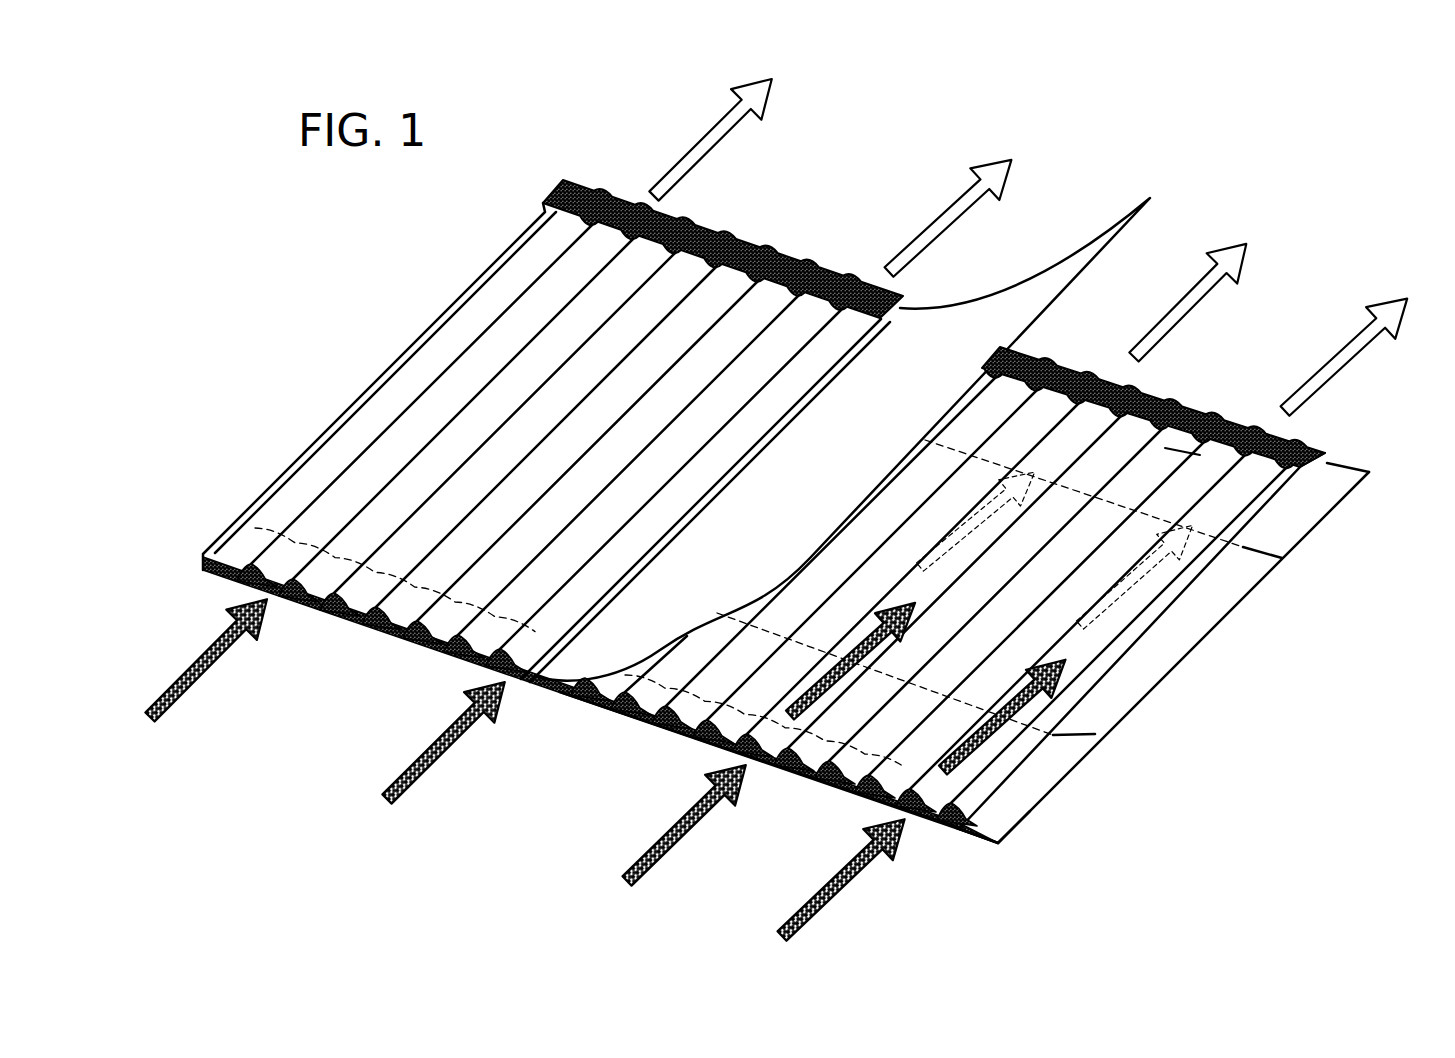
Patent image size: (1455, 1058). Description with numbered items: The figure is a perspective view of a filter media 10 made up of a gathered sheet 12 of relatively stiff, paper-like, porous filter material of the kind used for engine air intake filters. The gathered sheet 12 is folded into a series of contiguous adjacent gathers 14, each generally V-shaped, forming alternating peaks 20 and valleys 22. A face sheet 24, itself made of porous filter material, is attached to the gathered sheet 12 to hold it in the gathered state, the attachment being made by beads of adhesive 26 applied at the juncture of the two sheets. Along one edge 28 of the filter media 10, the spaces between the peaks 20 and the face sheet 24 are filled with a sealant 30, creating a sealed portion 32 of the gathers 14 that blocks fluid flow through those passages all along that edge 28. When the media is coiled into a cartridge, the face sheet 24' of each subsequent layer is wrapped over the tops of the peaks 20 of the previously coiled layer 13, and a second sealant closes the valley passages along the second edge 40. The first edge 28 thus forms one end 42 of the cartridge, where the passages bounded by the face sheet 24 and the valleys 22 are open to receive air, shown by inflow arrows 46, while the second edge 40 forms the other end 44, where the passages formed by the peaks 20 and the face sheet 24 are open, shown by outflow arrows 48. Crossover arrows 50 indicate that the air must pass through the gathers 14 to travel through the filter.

The filter media 10 is at (552, 242).
The gathered sheet 12 is at (913, 748).
The previously coiled layer 13 is at (1347, 468).
The gathers 14 is at (990, 807).
The peaks 20 is at (945, 818).
The valleys 22 is at (1207, 462).
The face sheet 24 is at (1163, 657).
The face sheet of subsequent layer 24' is at (842, 439).
The beads of adhesive 26 is at (1282, 558).
The one edge 28 is at (980, 840).
The sealant 30 is at (663, 723).
The sealed portion 32 is at (850, 770).
The second edge 40 is at (1323, 452).
The one end 42 is at (562, 693).
The other end 44 is at (1090, 366).
The inflow arrows 46 is at (195, 668).
The outflow arrows 48 is at (697, 150).
The crossover arrows 50 is at (1078, 500).